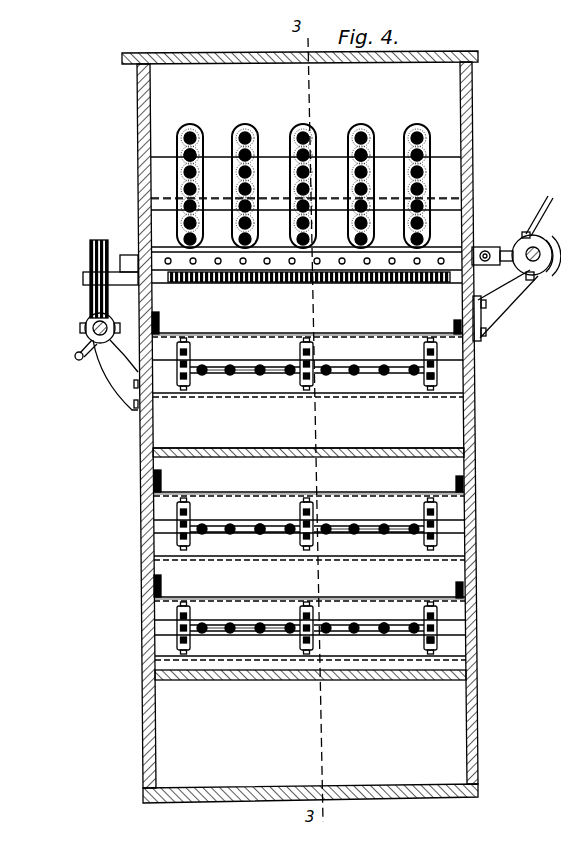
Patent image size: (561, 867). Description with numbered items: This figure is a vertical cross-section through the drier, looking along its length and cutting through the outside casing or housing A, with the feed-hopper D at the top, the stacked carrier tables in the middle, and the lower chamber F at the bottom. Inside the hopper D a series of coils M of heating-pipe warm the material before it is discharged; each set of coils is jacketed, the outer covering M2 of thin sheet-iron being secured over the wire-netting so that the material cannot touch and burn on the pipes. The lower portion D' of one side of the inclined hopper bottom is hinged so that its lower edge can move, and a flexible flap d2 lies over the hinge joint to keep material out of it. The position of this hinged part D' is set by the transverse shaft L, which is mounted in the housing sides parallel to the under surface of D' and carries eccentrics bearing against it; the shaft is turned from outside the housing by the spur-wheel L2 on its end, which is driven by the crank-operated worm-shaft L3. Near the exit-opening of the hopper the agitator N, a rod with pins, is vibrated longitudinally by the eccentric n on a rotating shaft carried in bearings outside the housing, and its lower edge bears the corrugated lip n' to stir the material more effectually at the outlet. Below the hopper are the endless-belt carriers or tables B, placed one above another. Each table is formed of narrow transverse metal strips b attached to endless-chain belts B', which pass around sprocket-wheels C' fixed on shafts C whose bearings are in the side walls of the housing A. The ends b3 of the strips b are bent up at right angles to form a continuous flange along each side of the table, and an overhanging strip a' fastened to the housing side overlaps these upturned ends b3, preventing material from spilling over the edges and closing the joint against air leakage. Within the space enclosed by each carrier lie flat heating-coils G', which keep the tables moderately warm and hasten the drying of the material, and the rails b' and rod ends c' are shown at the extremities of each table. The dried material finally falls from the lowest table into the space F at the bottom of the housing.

The outside casing A is at (476, 393).
The feed-hopper D is at (306, 155).
The heating-pipe coils M is at (178, 112).
The sheet-iron covering M2 is at (203, 136).
The flexible flap d2 is at (306, 204).
The hinged bottom portion D' is at (307, 240).
The agitator N is at (278, 258).
The eccentric n is at (527, 255).
The corrugated lip n' is at (307, 288).
The spur-wheel L2 is at (88, 256).
The transverse shaft L is at (127, 286).
The worm-shaft L3 is at (85, 325).
The endless-belt carriers B is at (308, 457).
The transverse strips b is at (308, 466).
The shelf lower rail b' is at (309, 534).
The overhanging strip a' is at (307, 447).
The upturned strip ends b3 is at (440, 333).
The endless-chain belts B' is at (307, 496).
The sprocket-wheels C' is at (307, 498).
The shafts C is at (334, 567).
The flat heating-coils G' is at (307, 511).
The rod end c' is at (439, 508).
The lower chamber F is at (311, 734).